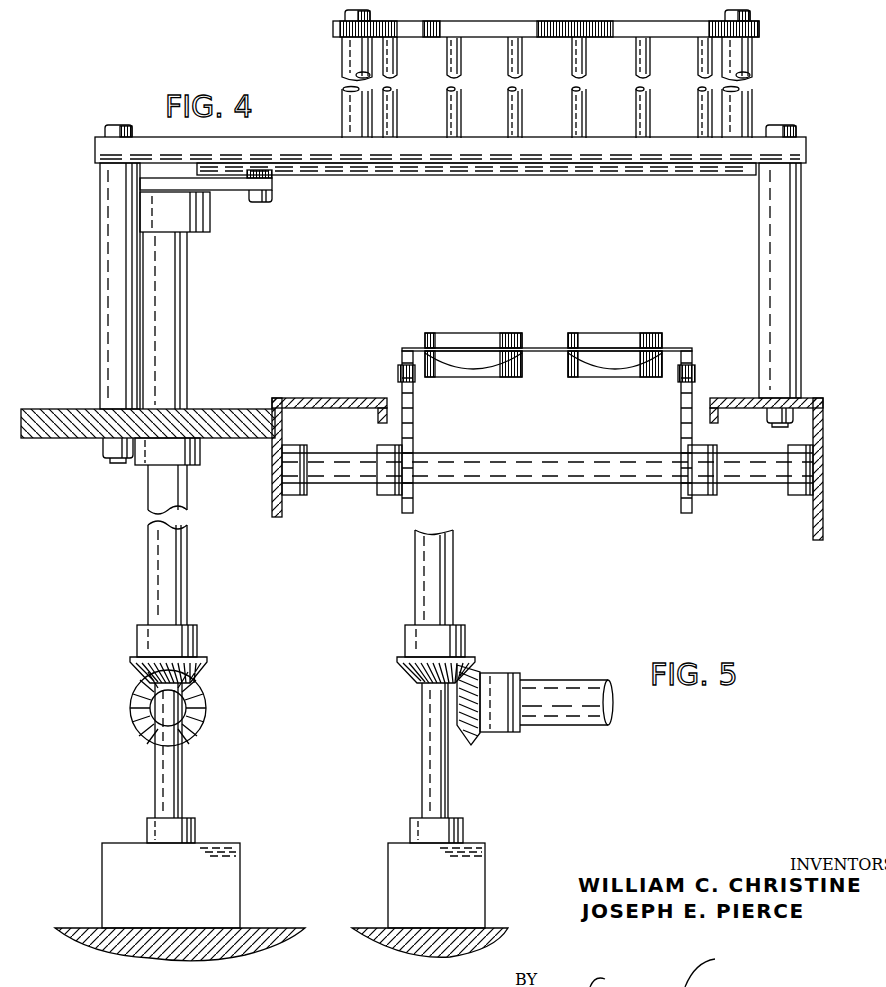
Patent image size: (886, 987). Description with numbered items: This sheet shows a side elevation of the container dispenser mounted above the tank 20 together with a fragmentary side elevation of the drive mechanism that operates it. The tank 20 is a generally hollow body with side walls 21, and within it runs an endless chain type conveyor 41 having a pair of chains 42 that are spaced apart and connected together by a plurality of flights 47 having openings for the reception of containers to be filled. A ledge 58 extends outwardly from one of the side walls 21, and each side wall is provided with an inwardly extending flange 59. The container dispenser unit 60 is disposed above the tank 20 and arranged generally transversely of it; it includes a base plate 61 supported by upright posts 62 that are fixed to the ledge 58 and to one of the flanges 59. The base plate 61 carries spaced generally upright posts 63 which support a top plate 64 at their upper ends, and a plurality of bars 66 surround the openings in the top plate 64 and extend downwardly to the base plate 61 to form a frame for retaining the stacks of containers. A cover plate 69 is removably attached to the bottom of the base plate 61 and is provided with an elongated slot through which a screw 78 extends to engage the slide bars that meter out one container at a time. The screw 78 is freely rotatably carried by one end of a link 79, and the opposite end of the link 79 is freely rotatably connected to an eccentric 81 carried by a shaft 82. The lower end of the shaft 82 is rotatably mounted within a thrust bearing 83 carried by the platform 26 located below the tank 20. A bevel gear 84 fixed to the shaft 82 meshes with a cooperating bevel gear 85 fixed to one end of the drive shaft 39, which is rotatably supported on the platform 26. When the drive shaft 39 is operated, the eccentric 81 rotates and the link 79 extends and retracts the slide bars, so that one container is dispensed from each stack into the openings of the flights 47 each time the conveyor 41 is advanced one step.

In FIG. 4, the tank 20 is at (285, 397).
In FIG. 4, the side walls 21 is at (272, 505).
In FIG. 4, the platform 26 is at (270, 933).
In FIG. 5, the platform 26 is at (460, 943).
In FIG. 5, the drive shaft 39 is at (583, 720).
In FIG. 4, the endless chain type conveyor 41 is at (695, 350).
In FIG. 4, the chains 42 is at (398, 374).
In FIG. 4, the flights 47 is at (540, 348).
In FIG. 4, the ledge 58 is at (64, 0).
In FIG. 4, the flange 59 is at (296, 0).
In FIG. 4, the container dispenser unit 60 is at (204, 0).
In FIG. 4, the base plate 61 is at (353, 154).
In FIG. 4, the upright posts 62 is at (110, 284).
In FIG. 4, the upright posts 63 is at (352, 104).
In FIG. 4, the top plate 64 is at (528, 8).
In FIG. 4, the bars 66 is at (449, 64).
In FIG. 4, the cover plate 69 is at (460, 166).
In FIG. 4, the screw 78 is at (261, 200).
In FIG. 4, the link 79 is at (235, 187).
In FIG. 4, the eccentric 81 is at (200, 232).
In FIG. 4, the shaft 82 is at (175, 360).
In FIG. 5, the shaft 82 is at (425, 575).
In FIG. 4, the thrust bearing 83 is at (177, 832).
In FIG. 5, the thrust bearing 83 is at (428, 828).
In FIG. 4, the bevel gear 84 is at (203, 672).
In FIG. 5, the bevel gear 84 is at (402, 672).
In FIG. 4, the bevel gear 85 is at (205, 710).
In FIG. 5, the bevel gear 85 is at (463, 737).